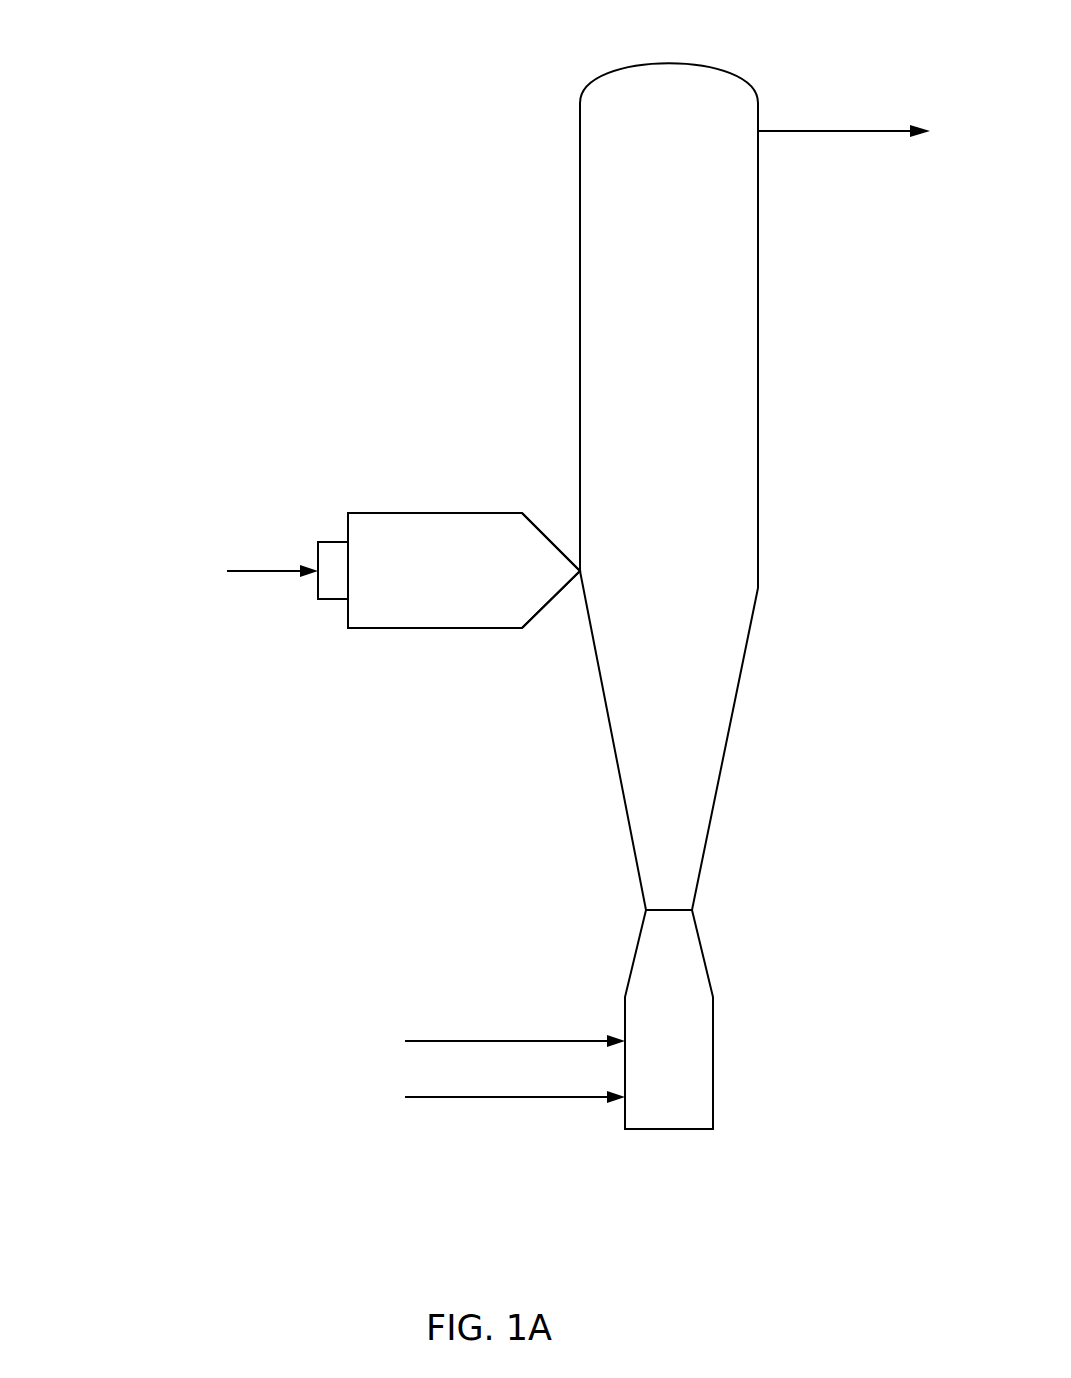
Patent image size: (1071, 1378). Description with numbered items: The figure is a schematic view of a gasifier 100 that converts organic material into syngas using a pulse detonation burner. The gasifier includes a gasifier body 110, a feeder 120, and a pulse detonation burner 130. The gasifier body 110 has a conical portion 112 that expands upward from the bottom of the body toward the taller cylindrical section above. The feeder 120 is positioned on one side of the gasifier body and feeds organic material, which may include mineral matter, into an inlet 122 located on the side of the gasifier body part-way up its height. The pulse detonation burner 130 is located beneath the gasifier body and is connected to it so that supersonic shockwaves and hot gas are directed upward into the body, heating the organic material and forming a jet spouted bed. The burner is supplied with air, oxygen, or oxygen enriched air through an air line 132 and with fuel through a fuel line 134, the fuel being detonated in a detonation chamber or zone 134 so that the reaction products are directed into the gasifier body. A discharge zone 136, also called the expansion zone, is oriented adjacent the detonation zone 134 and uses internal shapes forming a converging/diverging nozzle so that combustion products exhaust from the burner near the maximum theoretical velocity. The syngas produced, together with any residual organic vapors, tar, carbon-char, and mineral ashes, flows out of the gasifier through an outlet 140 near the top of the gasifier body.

The gasifier 100 is at (280, 45).
The gasifier body 110 is at (580, 310).
The conical portion 112 is at (723, 748).
The feeder 120 is at (420, 628).
The inlet 122 is at (569, 555).
The pulse detonation burner 130 is at (713, 1009).
The air line 132 is at (437, 1040).
The fuel line / detonation zone 134 is at (508, 1097).
The discharge zone 136 is at (682, 840).
The outlet 140 is at (773, 133).